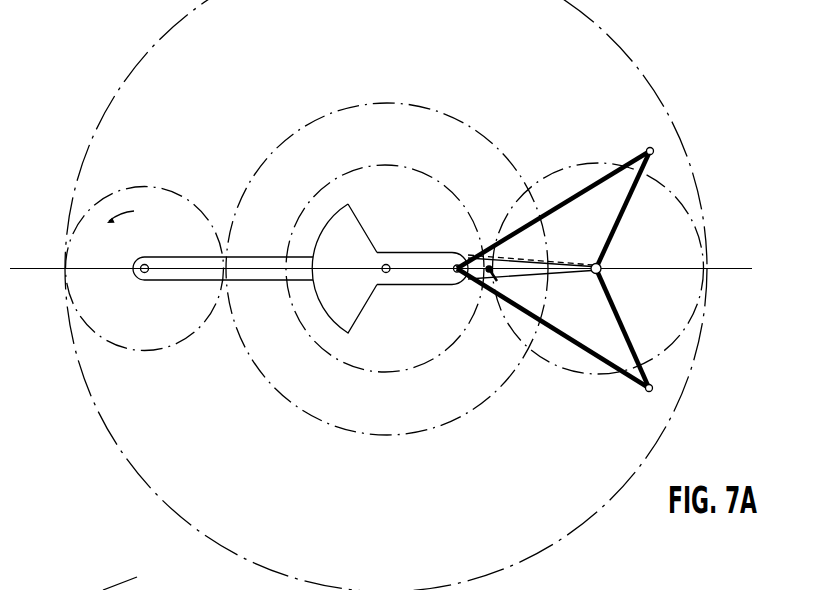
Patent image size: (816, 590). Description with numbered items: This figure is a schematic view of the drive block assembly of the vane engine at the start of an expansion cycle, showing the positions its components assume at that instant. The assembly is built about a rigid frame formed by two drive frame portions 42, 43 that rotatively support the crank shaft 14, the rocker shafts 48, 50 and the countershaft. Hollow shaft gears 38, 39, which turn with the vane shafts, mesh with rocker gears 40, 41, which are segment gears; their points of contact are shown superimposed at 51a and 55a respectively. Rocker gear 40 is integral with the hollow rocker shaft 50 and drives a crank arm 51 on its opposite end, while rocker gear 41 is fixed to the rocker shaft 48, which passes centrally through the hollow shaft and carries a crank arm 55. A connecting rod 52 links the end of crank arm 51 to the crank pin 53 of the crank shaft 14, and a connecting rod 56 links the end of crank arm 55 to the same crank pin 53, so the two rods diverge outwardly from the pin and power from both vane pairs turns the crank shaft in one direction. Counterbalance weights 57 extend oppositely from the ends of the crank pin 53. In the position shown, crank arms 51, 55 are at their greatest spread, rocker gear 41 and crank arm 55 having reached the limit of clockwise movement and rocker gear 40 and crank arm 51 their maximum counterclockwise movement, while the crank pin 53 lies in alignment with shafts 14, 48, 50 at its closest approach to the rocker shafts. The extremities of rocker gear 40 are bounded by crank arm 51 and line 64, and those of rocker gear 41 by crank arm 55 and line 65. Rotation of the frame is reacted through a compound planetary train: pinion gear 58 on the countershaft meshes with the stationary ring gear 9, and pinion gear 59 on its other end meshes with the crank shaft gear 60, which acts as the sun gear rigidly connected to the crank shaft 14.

The ring gear 9 is at (72, 192).
The crank shaft 14 is at (389, 275).
The hollow shaft gear 38 is at (390, 371).
The hollow shaft gear 39 is at (385, 282).
The rocker gear 40 is at (594, 375).
The rocker gear 41 is at (547, 176).
The drive frame portion 42 is at (223, 247).
The drive frame portion 43 is at (238, 258).
The rocker shaft 48 is at (623, 257).
The hollow rocker shaft 50 is at (601, 265).
The crank arm 51 is at (616, 313).
The point of contact 51a is at (487, 263).
The connecting rod 52 is at (566, 337).
The crank pin 53 is at (454, 277).
The crank arm 55 is at (635, 184).
The point of contact 55a is at (497, 281).
The connecting rod 56 is at (596, 182).
The crank shaft counterbalance weight 57 is at (354, 297).
The pinion gear 58 is at (145, 284).
The pinion gear 59 is at (160, 346).
The crank shaft gear 60 is at (327, 424).
The line 64 is at (557, 258).
The line 65 is at (568, 274).